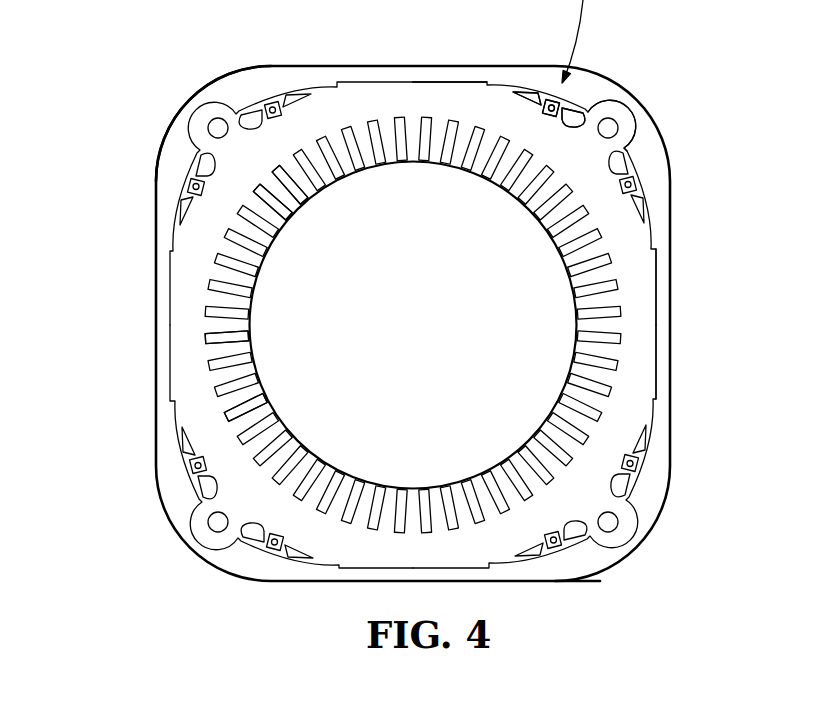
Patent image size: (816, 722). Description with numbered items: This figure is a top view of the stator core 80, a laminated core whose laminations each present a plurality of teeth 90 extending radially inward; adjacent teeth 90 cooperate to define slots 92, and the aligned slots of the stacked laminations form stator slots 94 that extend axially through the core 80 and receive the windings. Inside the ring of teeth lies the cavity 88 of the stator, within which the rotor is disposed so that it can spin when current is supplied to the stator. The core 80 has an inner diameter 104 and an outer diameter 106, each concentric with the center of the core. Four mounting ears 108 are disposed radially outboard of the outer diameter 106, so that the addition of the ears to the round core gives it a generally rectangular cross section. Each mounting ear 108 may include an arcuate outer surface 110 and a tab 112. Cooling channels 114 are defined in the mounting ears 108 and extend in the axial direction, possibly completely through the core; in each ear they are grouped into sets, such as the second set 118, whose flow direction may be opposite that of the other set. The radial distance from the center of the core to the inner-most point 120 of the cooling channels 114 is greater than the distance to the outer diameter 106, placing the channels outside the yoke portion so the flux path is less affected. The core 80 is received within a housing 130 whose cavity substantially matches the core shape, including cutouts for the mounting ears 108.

The stator core 80 is at (437, 100).
The cavity 88 is at (522, 352).
The teeth 90 is at (252, 338).
The slots 92 is at (292, 206).
The stator slots 94 is at (369, 460).
The inner diameter 104 is at (274, 400).
The outer diameter 106 is at (167, 331).
The mounting ears 108 is at (231, 92).
The arcuate outer surface 110 is at (574, 101).
The tab 112 is at (616, 111).
The cooling channels 114 is at (625, 151).
The second set of cooling channels 118 is at (648, 183).
The inner-most point of cooling channels 120 is at (550, 118).
The housing 130 is at (584, 555).